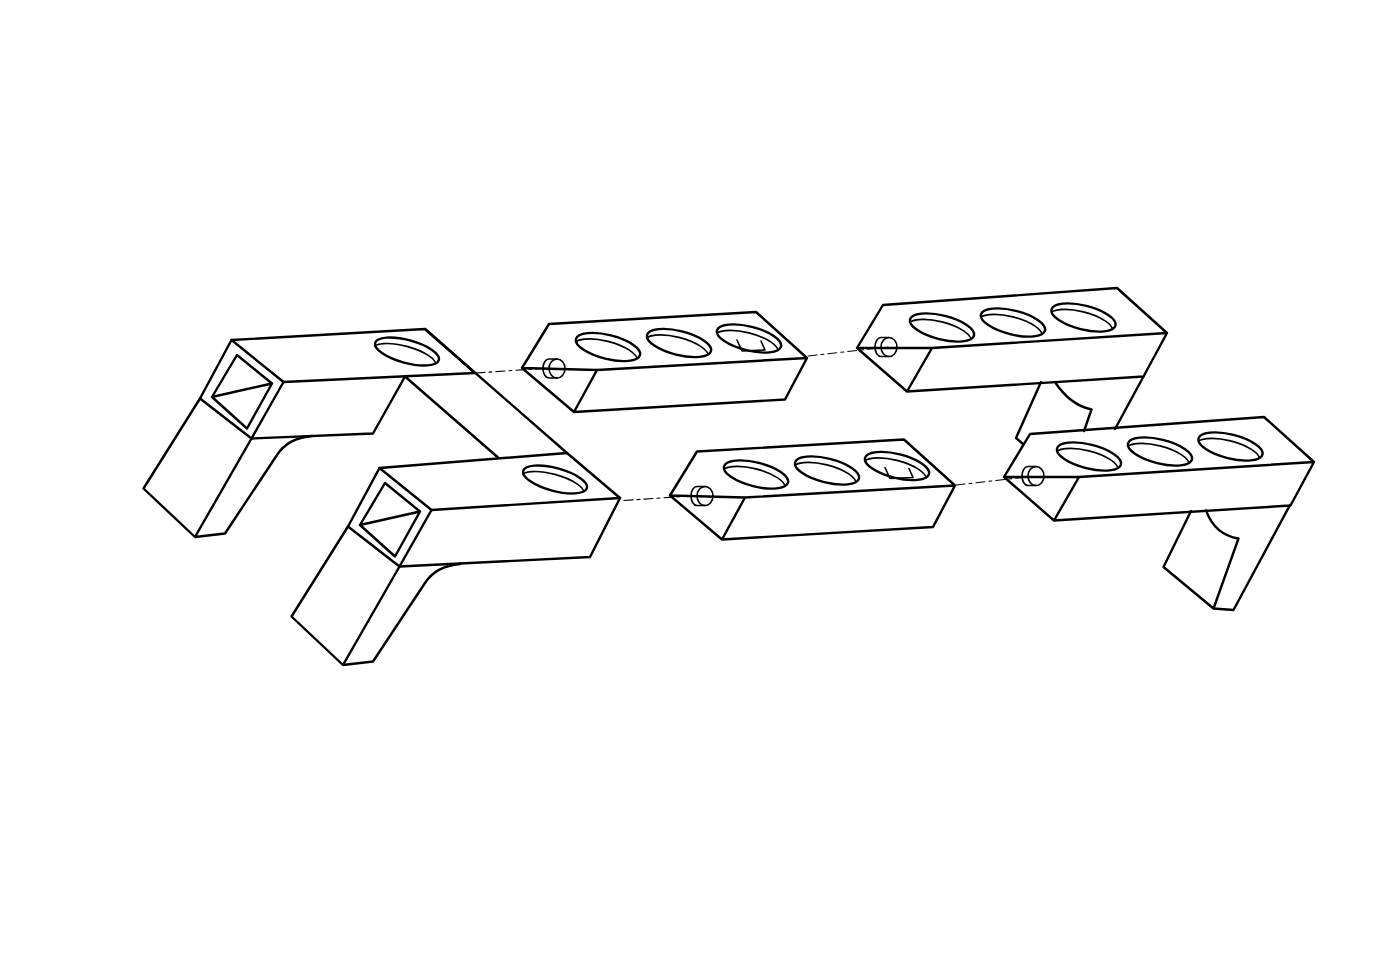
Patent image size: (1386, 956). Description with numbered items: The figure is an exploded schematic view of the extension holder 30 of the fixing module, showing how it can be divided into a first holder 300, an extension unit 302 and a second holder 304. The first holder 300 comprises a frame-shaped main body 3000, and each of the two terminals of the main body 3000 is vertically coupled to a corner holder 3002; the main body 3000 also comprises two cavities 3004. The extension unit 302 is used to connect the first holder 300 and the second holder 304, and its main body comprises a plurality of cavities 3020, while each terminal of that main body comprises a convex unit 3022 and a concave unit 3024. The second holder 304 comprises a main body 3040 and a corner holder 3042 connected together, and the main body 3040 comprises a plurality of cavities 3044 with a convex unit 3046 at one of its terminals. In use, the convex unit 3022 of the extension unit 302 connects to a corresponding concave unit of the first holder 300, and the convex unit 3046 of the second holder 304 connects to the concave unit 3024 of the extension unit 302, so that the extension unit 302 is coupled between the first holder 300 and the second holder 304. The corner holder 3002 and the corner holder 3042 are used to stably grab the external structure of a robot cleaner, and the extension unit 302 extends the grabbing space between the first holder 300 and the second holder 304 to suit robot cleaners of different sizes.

The extension holder 30 is at (1277, 110).
The first holder 300 is at (294, 284).
The main body 3000 is at (398, 441).
The corner holder 3002 is at (218, 522).
The cavities 3004 is at (412, 337).
The extension unit 302 is at (591, 287).
The cavities 3020 is at (769, 492).
The convex unit 3022 is at (697, 502).
The concave unit 3024 is at (927, 463).
The second holder 304 is at (864, 255).
The main body 3040 is at (1277, 445).
The corner holder 3042 is at (1227, 597).
The cavities 3044 is at (934, 310).
The convex unit 3046 is at (1027, 484).